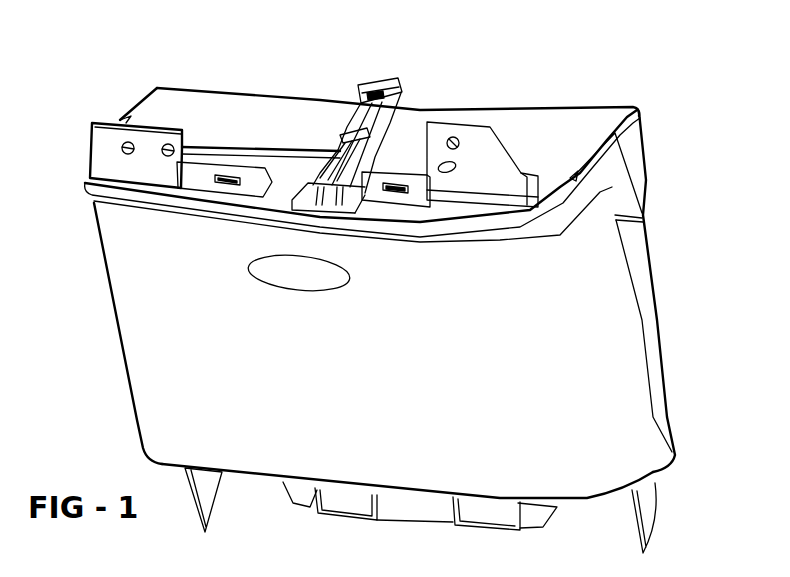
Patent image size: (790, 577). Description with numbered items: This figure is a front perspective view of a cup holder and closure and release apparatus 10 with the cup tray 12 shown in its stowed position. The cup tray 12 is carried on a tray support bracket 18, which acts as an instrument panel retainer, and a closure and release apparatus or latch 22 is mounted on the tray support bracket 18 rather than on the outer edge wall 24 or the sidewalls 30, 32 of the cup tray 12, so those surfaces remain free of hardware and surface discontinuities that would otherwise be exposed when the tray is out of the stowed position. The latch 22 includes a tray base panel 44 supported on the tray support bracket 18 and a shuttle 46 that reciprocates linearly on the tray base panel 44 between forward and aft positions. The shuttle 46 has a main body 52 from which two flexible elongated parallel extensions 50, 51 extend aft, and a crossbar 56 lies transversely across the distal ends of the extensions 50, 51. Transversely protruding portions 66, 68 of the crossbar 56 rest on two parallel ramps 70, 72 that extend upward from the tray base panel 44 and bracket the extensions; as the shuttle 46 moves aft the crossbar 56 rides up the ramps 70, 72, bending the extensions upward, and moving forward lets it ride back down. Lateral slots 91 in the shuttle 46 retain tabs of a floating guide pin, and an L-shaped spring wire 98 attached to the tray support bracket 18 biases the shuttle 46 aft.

The cup holder and closure and release apparatus 10 is at (683, 173).
The cup tray 12 is at (399, 332).
The tray support bracket 18 is at (570, 133).
The closure and release apparatus or latch 22 is at (369, 151).
The outer edge wall 24 is at (150, 207).
The sidewall 30 is at (132, 407).
The sidewall 32 is at (645, 415).
The tray base panel 44 is at (392, 130).
The shuttle 46 is at (365, 78).
The flexible elongated extension 50 is at (330, 150).
The flexible elongated extension 51 is at (415, 137).
The main body 52 is at (352, 97).
The crossbar 56 is at (365, 198).
The transversely protruding portion 66 is at (307, 186).
The transversely protruding portion 68 is at (375, 186).
The ramp 70 is at (325, 188).
The ramp 72 is at (347, 195).
The lateral slot 91 is at (383, 78).
The L-shaped spring wire 98 is at (232, 148).